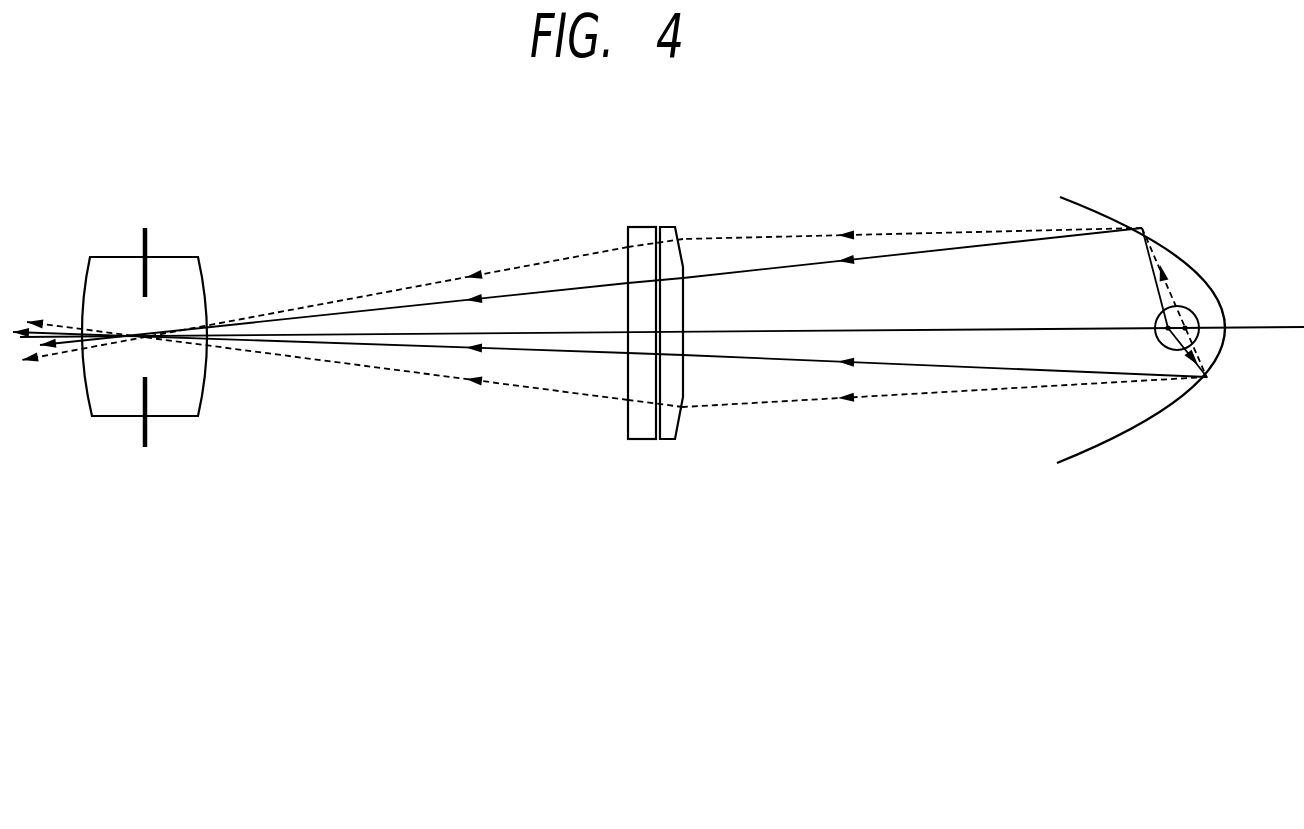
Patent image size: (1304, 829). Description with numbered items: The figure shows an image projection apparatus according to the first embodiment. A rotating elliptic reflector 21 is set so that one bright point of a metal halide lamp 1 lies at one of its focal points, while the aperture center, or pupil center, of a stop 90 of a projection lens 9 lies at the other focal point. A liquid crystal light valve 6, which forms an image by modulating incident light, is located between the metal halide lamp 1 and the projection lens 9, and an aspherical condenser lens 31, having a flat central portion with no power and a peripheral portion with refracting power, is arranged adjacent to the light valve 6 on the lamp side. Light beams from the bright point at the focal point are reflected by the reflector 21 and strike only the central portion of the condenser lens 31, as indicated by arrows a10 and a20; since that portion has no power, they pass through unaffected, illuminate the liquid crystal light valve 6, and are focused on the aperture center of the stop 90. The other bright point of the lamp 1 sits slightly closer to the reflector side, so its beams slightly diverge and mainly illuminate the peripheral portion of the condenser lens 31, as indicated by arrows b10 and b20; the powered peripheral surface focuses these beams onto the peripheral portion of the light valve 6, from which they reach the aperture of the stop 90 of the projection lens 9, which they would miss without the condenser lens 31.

The metal halide lamp 1 is at (1157, 322).
The rotating elliptic reflector 21 is at (1122, 218).
The liquid crystal light valve 6 is at (643, 227).
The aspherical condenser lens 31 is at (671, 227).
The projection lens 9 is at (122, 257).
The stop 90 is at (147, 447).
The arrow a10 is at (591, 288).
The arrow a20 is at (610, 352).
The arrow b10 is at (582, 284).
The arrow b20 is at (617, 363).